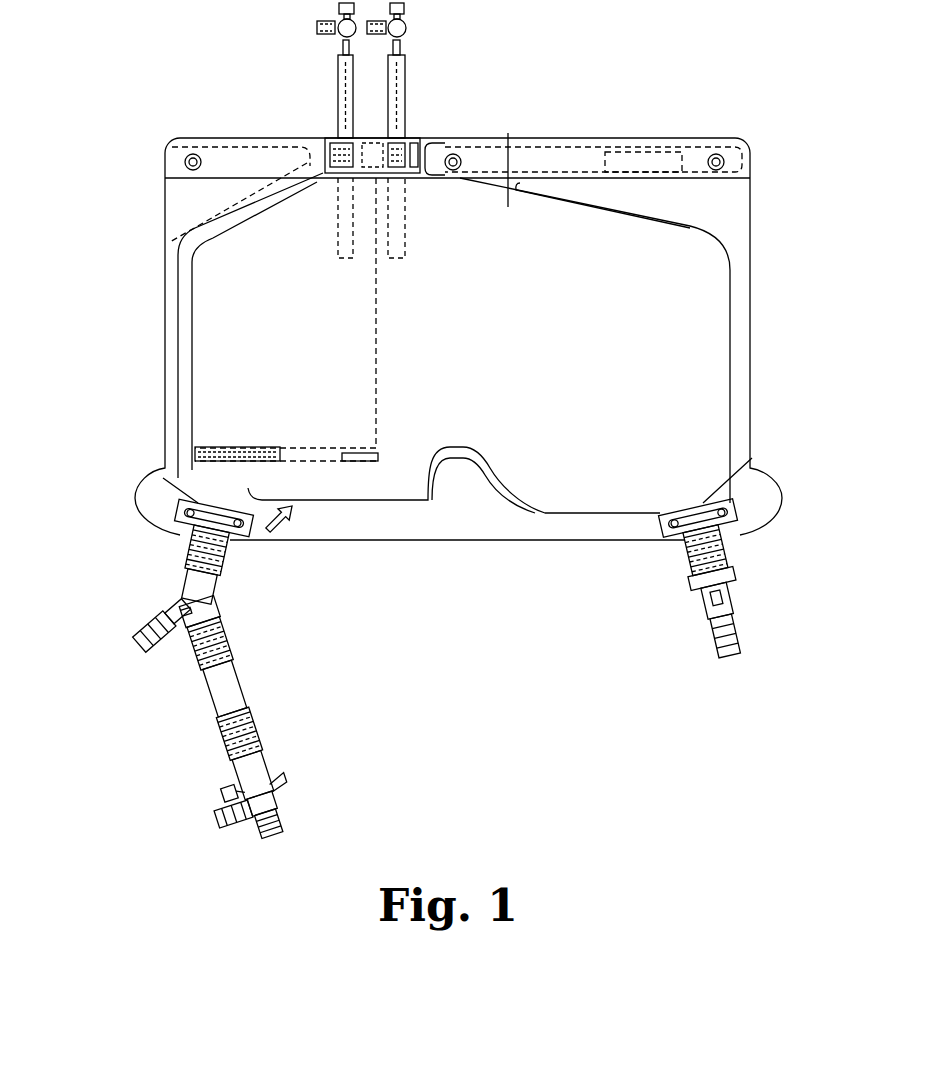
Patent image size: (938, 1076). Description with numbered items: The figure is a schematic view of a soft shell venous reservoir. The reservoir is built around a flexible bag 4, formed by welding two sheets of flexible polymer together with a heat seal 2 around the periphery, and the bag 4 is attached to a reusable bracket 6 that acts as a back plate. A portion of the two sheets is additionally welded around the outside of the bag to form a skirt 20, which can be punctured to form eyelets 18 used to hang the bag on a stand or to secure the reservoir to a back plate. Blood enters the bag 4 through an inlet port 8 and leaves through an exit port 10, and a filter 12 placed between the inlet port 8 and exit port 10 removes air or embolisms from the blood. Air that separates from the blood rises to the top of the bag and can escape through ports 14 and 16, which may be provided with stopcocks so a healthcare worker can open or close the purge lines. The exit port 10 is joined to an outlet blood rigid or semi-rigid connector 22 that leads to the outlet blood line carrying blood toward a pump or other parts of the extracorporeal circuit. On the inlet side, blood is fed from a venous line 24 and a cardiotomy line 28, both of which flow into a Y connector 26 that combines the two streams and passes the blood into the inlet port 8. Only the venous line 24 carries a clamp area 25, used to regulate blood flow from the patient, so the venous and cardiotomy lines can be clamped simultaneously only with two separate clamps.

The heat seal 2 is at (175, 328).
The bag 4 is at (690, 352).
The reusable bracket 6 is at (158, 200).
The inlet port 8 is at (232, 562).
The exit port 10 is at (715, 587).
The filter 12 is at (380, 345).
The port 14 is at (333, 68).
The port 16 is at (413, 68).
The eyelets 18 is at (716, 140).
The skirt 20 is at (237, 158).
The outlet blood rigid or semi-rigid connector 22 is at (700, 650).
The venous line 24 is at (224, 721).
The clamp area 25 is at (203, 706).
The Y connector 26 is at (220, 612).
The cardiotomy line 28 is at (117, 633).